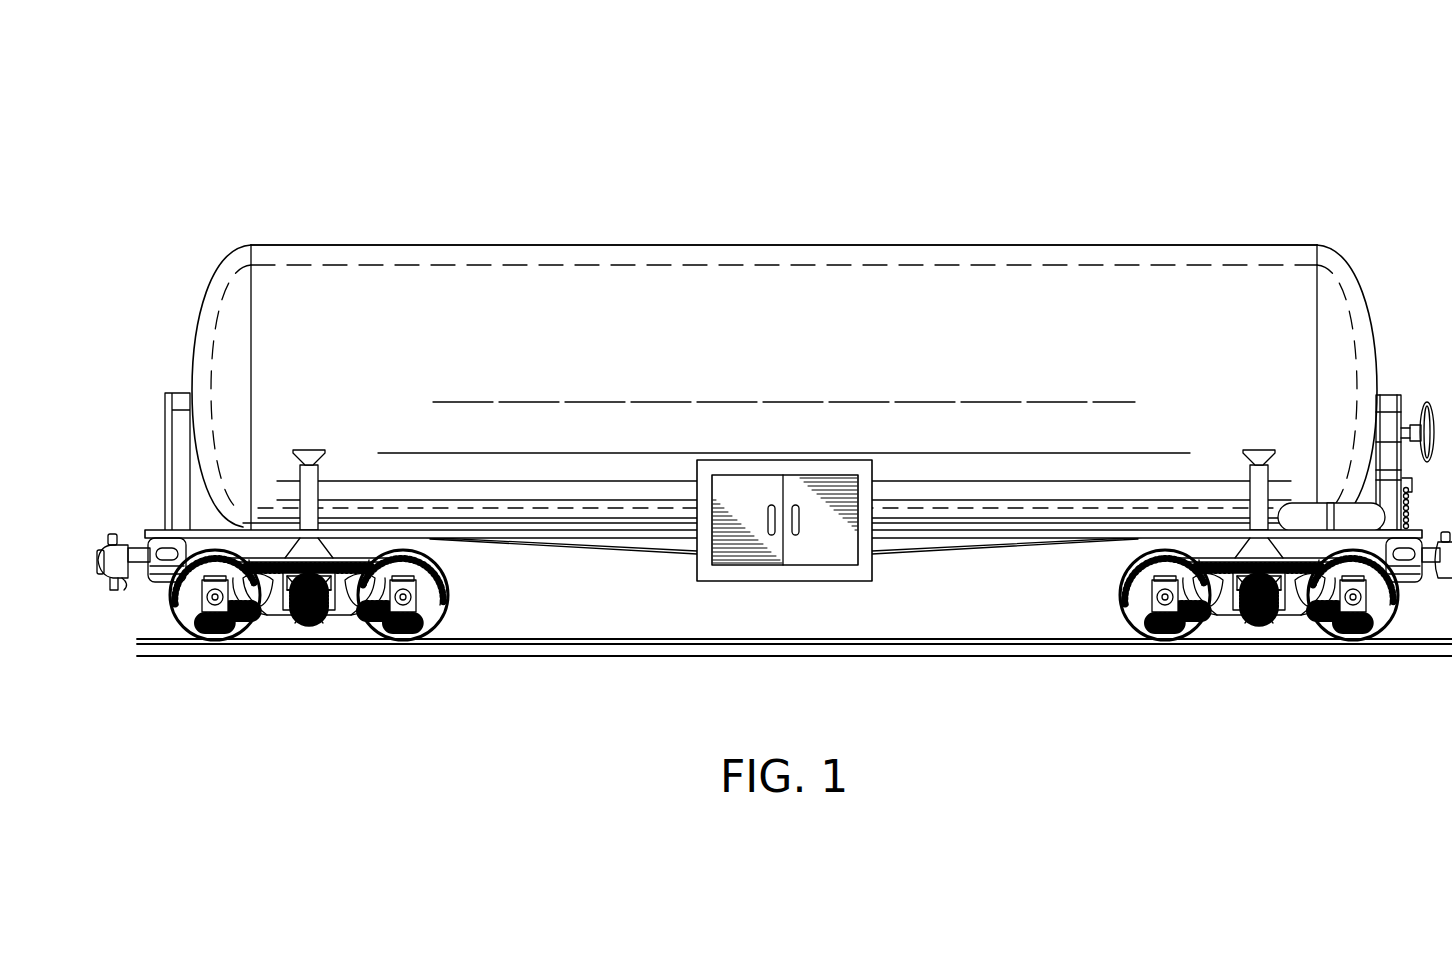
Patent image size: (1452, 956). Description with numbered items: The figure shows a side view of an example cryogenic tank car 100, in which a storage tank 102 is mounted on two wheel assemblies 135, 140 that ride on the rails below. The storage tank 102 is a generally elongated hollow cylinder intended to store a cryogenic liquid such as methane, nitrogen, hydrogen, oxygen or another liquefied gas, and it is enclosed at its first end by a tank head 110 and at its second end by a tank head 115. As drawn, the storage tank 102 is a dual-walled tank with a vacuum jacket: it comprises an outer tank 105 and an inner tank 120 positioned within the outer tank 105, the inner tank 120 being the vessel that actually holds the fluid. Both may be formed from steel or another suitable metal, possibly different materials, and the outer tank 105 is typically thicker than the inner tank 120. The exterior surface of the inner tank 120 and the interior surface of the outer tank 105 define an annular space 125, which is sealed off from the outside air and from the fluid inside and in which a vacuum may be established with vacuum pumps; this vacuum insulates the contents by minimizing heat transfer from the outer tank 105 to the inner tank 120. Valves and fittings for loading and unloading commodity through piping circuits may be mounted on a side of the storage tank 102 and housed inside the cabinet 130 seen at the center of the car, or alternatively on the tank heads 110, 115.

The cryogenic tank car 100 is at (774, 402).
The storage tank 102 is at (445, 341).
The outer tank 105 is at (638, 247).
The tank head 110 is at (218, 292).
The tank head 115 is at (1352, 293).
The inner tank 120 is at (1018, 267).
The annular space 125 is at (838, 256).
The cabinet 130 is at (782, 462).
The wheel assembly 135 is at (337, 617).
The wheel assembly 140 is at (1213, 617).